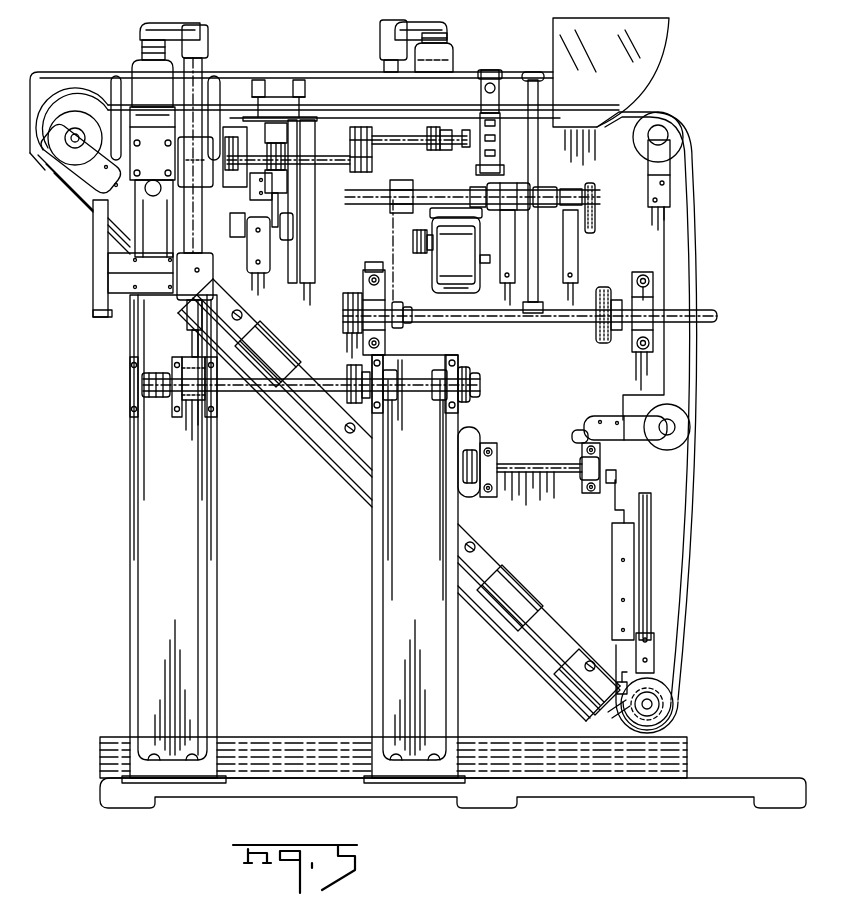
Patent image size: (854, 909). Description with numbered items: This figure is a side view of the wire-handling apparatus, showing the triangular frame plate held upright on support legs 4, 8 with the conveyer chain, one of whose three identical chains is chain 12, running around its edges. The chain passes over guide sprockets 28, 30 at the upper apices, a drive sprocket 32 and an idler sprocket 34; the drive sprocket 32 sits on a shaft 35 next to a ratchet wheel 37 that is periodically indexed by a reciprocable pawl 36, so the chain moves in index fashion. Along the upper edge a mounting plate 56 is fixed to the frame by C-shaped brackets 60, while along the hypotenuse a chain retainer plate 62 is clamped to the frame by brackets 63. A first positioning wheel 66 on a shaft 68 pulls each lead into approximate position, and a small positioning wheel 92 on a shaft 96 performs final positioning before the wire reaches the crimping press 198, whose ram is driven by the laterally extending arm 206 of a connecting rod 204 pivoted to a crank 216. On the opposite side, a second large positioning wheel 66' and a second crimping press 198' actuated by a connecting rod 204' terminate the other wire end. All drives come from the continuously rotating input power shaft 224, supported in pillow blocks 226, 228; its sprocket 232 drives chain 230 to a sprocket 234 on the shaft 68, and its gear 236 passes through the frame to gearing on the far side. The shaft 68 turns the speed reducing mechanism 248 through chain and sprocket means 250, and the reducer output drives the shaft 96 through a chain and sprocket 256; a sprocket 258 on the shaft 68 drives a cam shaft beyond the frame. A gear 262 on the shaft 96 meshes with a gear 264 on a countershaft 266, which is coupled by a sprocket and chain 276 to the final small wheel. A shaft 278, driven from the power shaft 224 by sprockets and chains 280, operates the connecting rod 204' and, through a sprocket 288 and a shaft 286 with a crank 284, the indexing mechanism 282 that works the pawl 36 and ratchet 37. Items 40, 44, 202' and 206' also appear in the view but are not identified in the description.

The support leg 4 is at (130, 624).
The support leg 8 is at (372, 616).
The chain 12 is at (476, 87).
The guide sprocket 28 is at (672, 122).
The guide sprocket 30 is at (62, 150).
The drive sprocket 32 is at (668, 690).
The idler sprocket 34 is at (690, 427).
The shaft 35 is at (626, 712).
The reciprocable pawl 36 is at (613, 683).
The ratchet wheel 37 is at (664, 705).
The cylinder 40 is at (578, 650).
The chute 44 is at (660, 40).
The mounting plate 56 is at (515, 78).
The C-shaped brackets 60 is at (111, 82).
The chain retainer plate 62 is at (350, 460).
The brackets 63 is at (530, 585).
The first positioning wheel 66 is at (539, 196).
The second large positioning wheel 66' is at (283, 212).
The shaft 68 is at (440, 190).
The small positioning wheel 92 is at (480, 126).
The shaft 96 is at (410, 144).
The crimping press 198 is at (459, 52).
The second crimping press 198' is at (134, 148).
The slide block 202' is at (113, 258).
The connecting rod 204 is at (373, 46).
The connecting rod 204' is at (214, 191).
The laterally extending arm 206 is at (440, 27).
The cap 206' is at (157, 24).
The crank 216 is at (192, 402).
The input power shaft 224 is at (343, 312).
The pillow block 226 is at (643, 276).
The pillow block 228 is at (366, 272).
The chain 230 is at (393, 232).
The sprocket 232 is at (412, 320).
The sprocket 234 is at (390, 200).
The gear 236 is at (604, 344).
The speed reducing mechanism 248 is at (420, 256).
The chain and sprocket means 250 is at (481, 252).
The chain and sprocket 256 is at (456, 213).
The sprocket 258 is at (614, 182).
The gear 262 is at (376, 124).
The gear 264 is at (350, 168).
The countershaft 266 is at (298, 180).
The sprocket and chain 276 is at (236, 184).
The shaft 278 is at (232, 393).
The sprockets and chains 280 is at (352, 362).
The indexing mechanism 282 is at (612, 580).
The crank 284 is at (604, 466).
The shaft 286 is at (536, 464).
The sprocket 288 is at (460, 472).